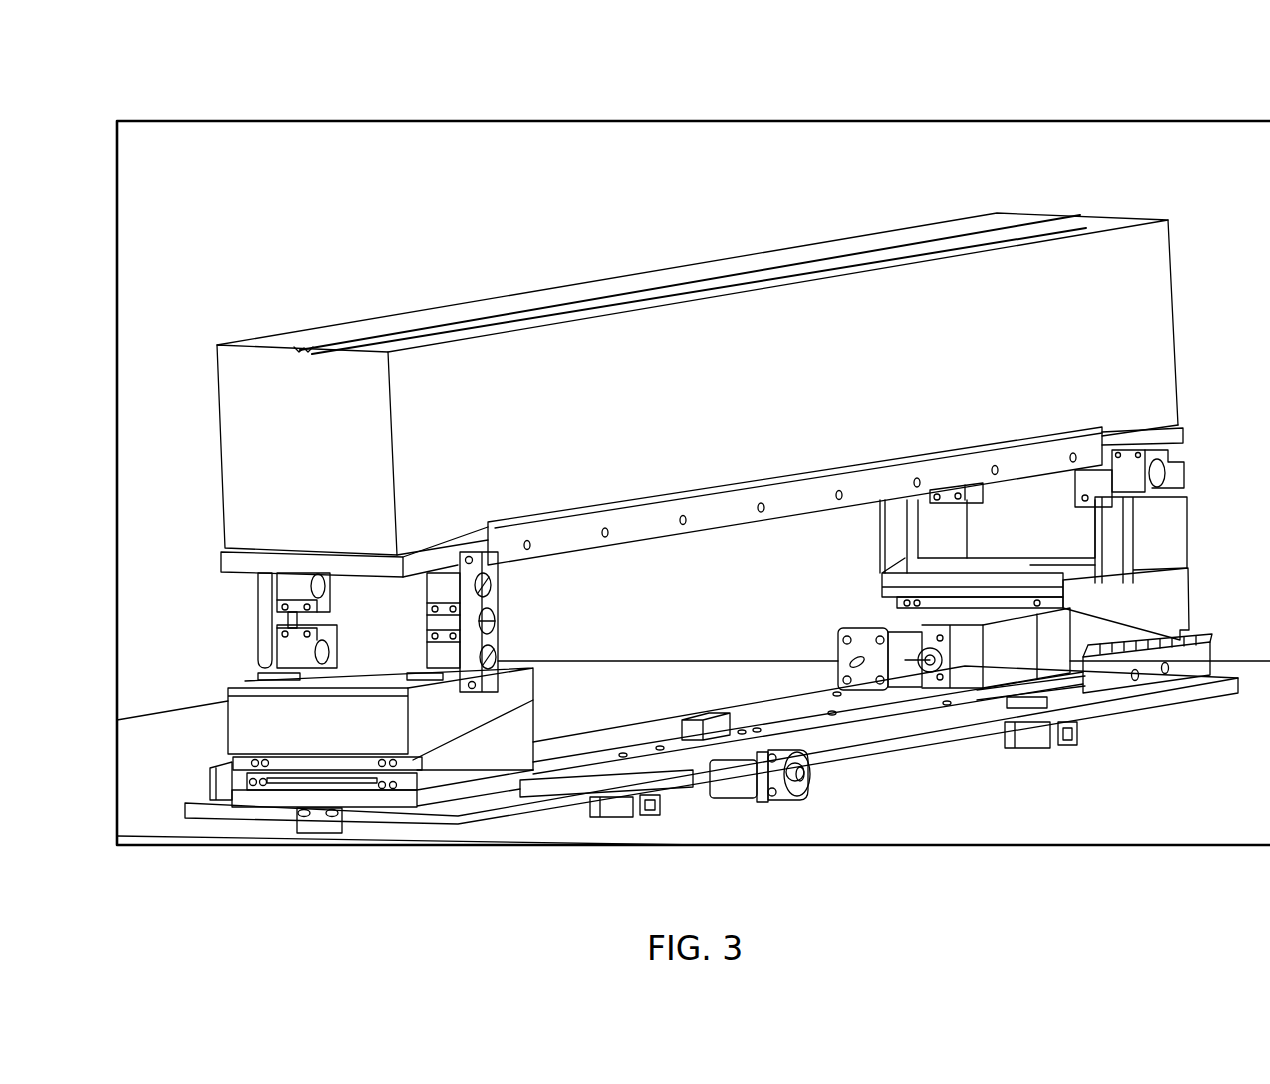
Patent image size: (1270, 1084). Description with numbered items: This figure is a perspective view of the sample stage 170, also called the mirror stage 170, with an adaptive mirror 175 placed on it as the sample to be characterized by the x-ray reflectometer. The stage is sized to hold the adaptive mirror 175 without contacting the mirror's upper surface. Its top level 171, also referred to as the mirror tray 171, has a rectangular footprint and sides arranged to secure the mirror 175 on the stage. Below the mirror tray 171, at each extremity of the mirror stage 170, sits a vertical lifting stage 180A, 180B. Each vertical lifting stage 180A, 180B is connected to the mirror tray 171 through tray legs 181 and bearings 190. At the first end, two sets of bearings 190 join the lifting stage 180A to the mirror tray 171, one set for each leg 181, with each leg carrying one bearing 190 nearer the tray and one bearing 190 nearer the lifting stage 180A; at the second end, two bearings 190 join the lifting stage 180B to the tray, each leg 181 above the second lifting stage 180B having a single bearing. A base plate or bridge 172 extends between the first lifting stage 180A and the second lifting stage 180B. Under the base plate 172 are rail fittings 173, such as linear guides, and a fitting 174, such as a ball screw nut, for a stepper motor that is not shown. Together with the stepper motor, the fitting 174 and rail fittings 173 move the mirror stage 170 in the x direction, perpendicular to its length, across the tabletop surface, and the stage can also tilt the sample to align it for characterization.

The sample stage 170 is at (164, 92).
The top level 171 is at (237, 563).
The base plate 172 is at (873, 725).
The rail fittings 173 is at (611, 818).
The fitting 174 is at (733, 800).
The adaptive mirror 175 is at (237, 380).
The vertical lifting stage 180A is at (342, 737).
The vertical lifting stage 180B is at (1175, 619).
The tray legs 181 is at (260, 625).
The bearings 190 is at (493, 592).